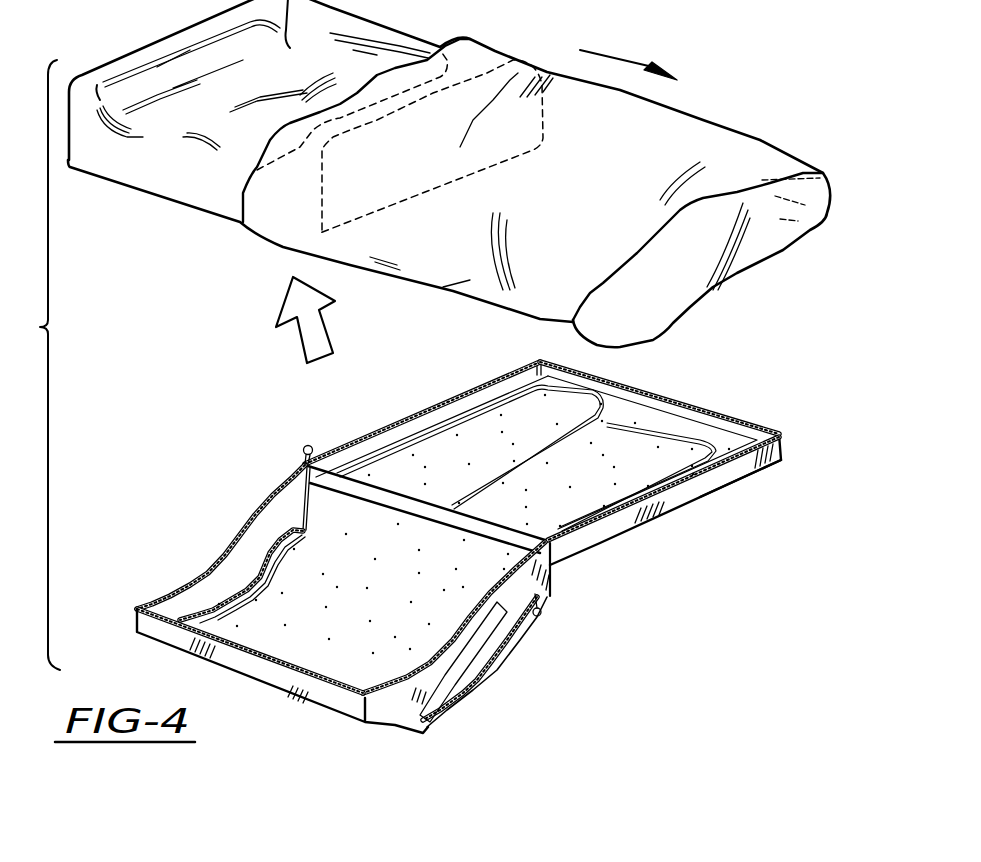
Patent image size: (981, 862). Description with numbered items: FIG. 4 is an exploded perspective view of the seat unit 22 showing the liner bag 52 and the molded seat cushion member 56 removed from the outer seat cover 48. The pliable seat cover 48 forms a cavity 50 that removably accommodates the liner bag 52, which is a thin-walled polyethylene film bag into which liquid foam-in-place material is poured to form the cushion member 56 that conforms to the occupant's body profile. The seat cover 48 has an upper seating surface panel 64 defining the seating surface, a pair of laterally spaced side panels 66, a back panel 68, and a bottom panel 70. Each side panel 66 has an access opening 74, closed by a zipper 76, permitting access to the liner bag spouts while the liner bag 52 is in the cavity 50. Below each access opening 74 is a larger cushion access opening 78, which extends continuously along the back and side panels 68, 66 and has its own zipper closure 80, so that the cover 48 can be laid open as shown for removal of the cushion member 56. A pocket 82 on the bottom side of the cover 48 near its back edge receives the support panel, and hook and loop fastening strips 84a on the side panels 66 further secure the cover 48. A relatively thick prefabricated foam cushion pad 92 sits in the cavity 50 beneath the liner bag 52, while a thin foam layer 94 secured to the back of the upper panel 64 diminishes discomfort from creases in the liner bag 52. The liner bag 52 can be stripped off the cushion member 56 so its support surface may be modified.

The seat unit 22 is at (188, 359).
The outer seat cushion enclosure or bag 48 is at (783, 447).
The cavity 50 is at (740, 427).
The liner bag 52 is at (713, 133).
The seat cushion member 56 is at (150, 177).
The upper seating surface panel 64 is at (427, 730).
The side panels 66 is at (253, 537).
The back panel 68 is at (680, 410).
The bottom panel 70 is at (673, 510).
The access opening 74 is at (287, 533).
The zipper 76 is at (192, 610).
The cushion access opening 78 is at (270, 667).
The zipper closure 80 is at (385, 433).
The pocket 82 is at (743, 483).
The hook and loop fastening strip 84a is at (473, 663).
The foam cushion pad 92 is at (487, 427).
The foam layer 94 is at (240, 623).